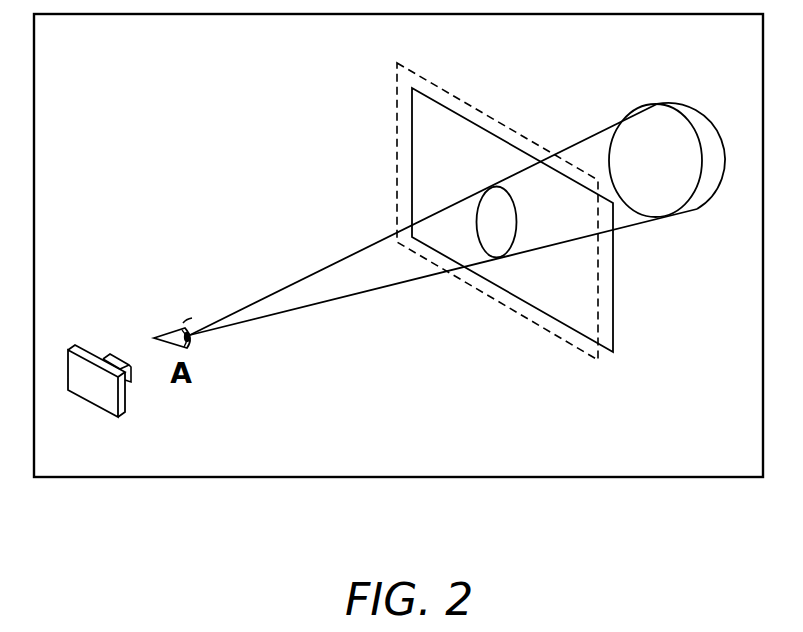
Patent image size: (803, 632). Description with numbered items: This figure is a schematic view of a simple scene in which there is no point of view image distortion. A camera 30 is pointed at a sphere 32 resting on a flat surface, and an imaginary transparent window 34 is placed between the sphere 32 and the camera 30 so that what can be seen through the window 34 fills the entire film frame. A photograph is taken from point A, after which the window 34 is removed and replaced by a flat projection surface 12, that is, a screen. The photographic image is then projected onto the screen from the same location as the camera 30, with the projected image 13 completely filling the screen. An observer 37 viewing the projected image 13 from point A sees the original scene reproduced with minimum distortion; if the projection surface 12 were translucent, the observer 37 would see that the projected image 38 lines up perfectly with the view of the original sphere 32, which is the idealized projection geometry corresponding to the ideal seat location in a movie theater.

The projection surface 12 is at (430, 110).
The projected image 13 is at (485, 157).
The camera 30 is at (92, 378).
The sphere 32 is at (645, 137).
The window 34 is at (397, 107).
The observer 37 is at (182, 323).
The projected image lines 38 is at (343, 257).